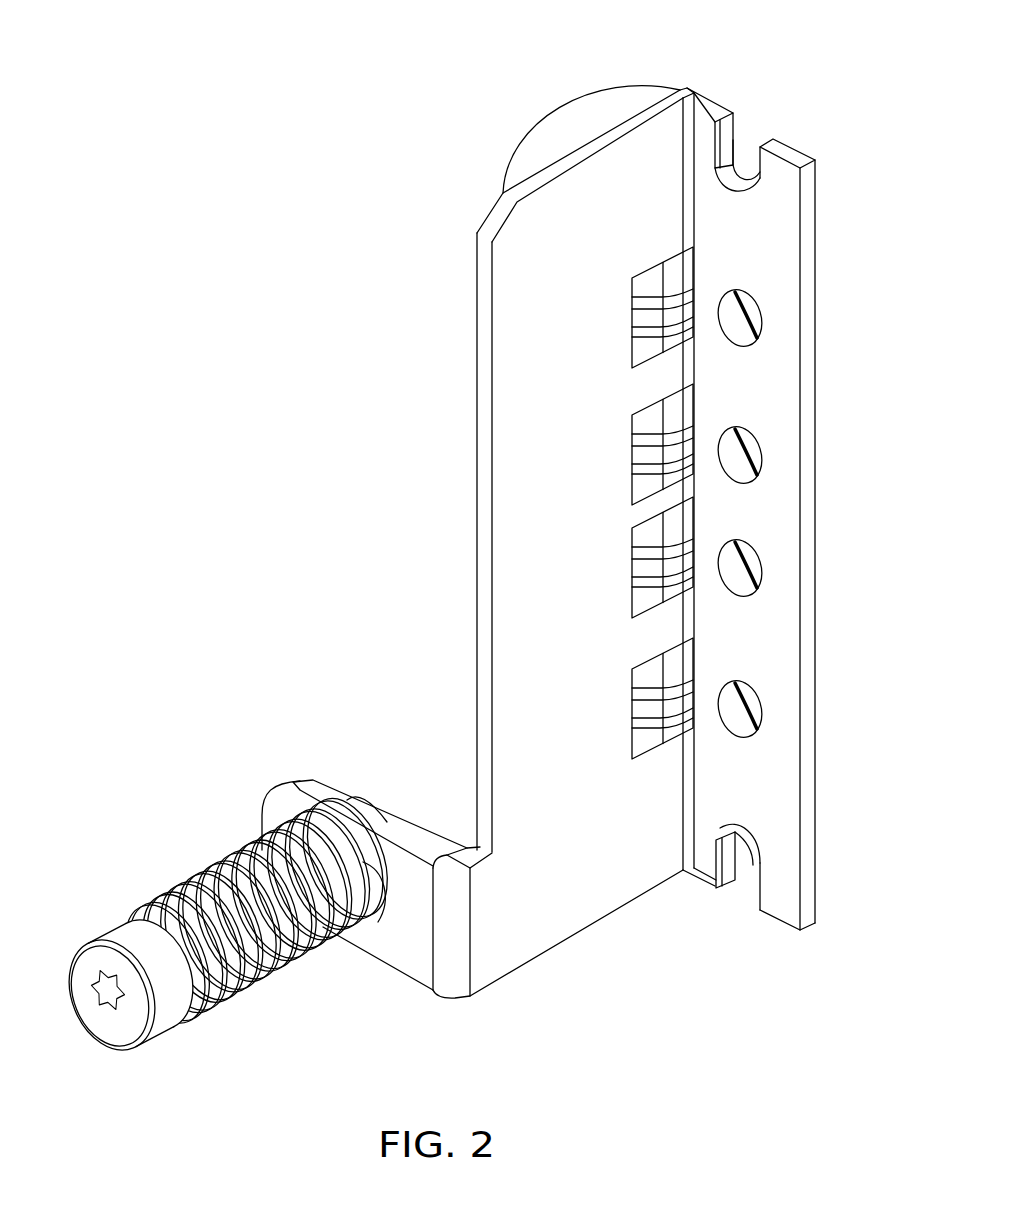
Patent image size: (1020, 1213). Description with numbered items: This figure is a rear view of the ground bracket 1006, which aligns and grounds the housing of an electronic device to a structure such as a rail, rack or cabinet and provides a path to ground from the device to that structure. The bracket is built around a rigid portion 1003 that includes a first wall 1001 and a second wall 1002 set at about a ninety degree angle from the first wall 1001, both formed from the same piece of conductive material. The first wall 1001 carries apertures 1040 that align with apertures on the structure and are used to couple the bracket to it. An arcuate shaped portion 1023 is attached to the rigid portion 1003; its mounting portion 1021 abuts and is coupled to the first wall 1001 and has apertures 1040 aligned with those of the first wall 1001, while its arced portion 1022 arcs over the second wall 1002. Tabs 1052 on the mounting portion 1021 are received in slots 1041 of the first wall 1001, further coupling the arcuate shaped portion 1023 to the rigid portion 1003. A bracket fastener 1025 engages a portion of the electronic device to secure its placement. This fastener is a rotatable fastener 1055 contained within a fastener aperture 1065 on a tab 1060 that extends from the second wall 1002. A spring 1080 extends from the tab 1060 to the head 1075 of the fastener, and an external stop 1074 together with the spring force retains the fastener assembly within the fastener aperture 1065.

The first wall 1001 is at (802, 912).
The second wall 1002 is at (558, 942).
The rigid portion 1003 is at (601, 932).
The ground bracket 1006 is at (428, 227).
The mounting portion 1021 is at (747, 163).
The arced portion 1022 is at (607, 110).
The arcuate shaped portion 1023 is at (719, 80).
The bracket fastener 1025 is at (121, 870).
The aperture 1040 is at (752, 324).
The slot 1041 is at (740, 192).
The tab 1052 is at (731, 128).
The rotatable fastener 1055 is at (100, 1018).
The tab 1060 is at (268, 818).
The fastener aperture 1065 is at (383, 905).
The external stop 1074 is at (360, 795).
The head 1075 is at (163, 1017).
The spring 1080 is at (253, 970).